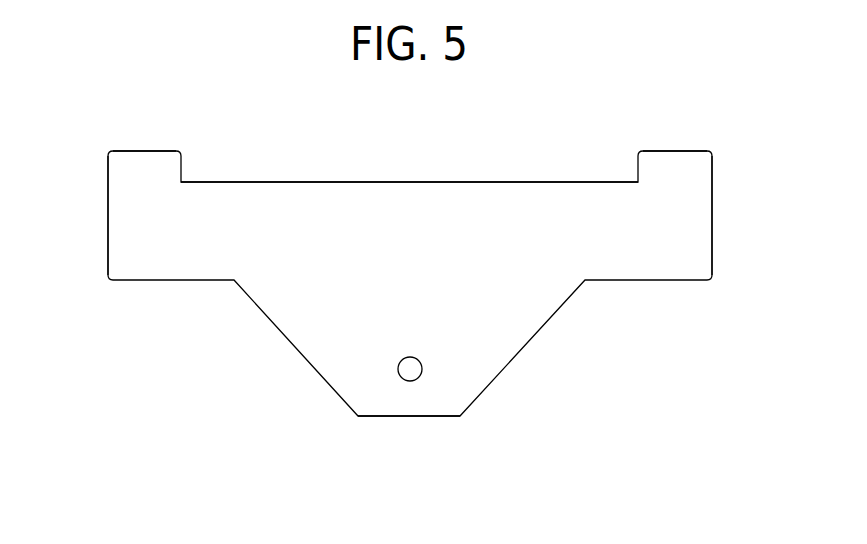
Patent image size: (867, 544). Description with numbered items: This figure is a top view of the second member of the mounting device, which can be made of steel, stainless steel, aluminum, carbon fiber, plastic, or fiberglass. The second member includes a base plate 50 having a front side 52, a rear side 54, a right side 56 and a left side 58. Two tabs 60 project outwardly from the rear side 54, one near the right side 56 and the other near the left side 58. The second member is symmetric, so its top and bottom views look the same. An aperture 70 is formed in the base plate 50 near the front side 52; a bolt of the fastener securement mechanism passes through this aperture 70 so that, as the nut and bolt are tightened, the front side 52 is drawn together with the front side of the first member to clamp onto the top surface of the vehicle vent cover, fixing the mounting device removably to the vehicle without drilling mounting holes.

The base plate 50 is at (505, 290).
The front side 52 is at (402, 417).
The rear side 54 is at (341, 182).
The right side 56 is at (712, 213).
The left side 58 is at (108, 217).
The tabs 60 is at (147, 168).
The aperture 70 is at (398, 368).